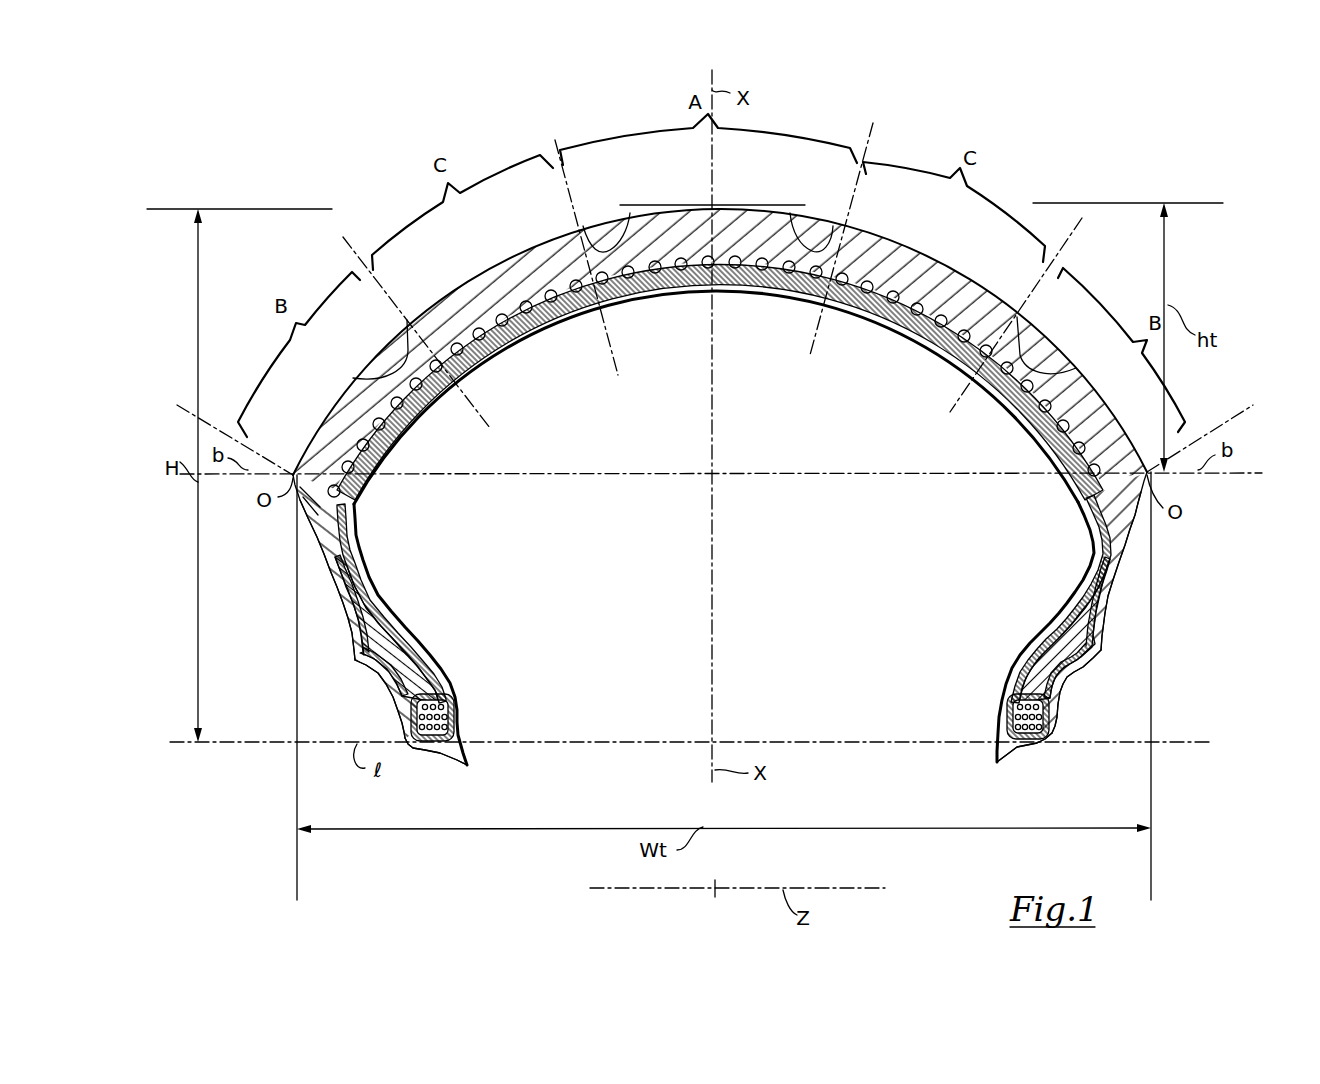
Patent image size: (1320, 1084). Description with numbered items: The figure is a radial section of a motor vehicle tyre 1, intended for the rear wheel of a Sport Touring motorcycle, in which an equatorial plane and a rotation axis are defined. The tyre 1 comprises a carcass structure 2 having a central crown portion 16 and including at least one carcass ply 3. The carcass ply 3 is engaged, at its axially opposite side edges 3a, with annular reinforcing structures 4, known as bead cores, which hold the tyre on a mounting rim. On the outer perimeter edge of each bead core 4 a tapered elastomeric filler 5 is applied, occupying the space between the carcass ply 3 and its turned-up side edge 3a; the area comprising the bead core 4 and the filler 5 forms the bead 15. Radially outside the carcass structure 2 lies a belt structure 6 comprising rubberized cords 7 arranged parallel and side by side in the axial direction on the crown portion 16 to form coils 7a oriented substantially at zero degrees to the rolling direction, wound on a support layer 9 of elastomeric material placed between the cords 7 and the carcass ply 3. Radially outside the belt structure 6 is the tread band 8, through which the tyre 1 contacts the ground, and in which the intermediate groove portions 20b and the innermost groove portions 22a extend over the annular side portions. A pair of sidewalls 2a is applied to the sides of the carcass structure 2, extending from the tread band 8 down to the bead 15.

The tyre 1 is at (1035, 178).
The carcass structure 2 is at (1122, 540).
The sidewalls 2a is at (338, 602).
The carcass ply 3 is at (1040, 362).
The side edges of the carcass ply 3a is at (380, 672).
The annular reinforcing structures 4 is at (460, 710).
The tapered elastomeric filler 5 is at (413, 657).
The belt structure 6 is at (302, 520).
The rubberized cords 7 is at (490, 320).
The coils 7a is at (652, 292).
The tread band 8 is at (988, 280).
The support layer 9 is at (378, 525).
The bead 15 is at (482, 753).
The central crown portion 16 is at (913, 333).
The second axially intermediate portion of the grooves 20b is at (418, 395).
The first axially innermost portion of the grooves 22a is at (613, 237).